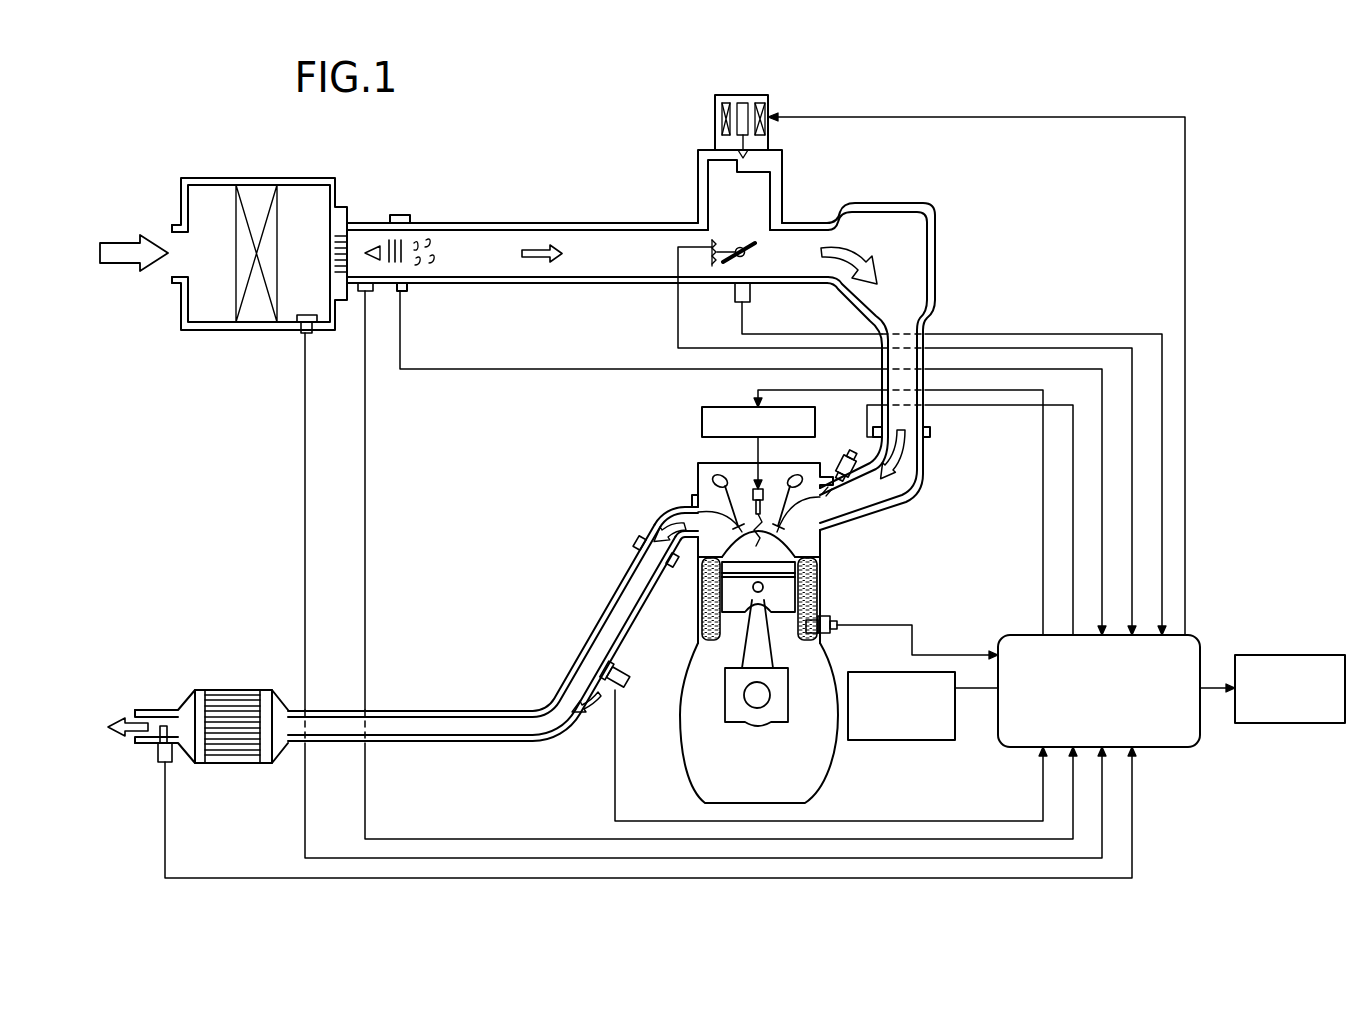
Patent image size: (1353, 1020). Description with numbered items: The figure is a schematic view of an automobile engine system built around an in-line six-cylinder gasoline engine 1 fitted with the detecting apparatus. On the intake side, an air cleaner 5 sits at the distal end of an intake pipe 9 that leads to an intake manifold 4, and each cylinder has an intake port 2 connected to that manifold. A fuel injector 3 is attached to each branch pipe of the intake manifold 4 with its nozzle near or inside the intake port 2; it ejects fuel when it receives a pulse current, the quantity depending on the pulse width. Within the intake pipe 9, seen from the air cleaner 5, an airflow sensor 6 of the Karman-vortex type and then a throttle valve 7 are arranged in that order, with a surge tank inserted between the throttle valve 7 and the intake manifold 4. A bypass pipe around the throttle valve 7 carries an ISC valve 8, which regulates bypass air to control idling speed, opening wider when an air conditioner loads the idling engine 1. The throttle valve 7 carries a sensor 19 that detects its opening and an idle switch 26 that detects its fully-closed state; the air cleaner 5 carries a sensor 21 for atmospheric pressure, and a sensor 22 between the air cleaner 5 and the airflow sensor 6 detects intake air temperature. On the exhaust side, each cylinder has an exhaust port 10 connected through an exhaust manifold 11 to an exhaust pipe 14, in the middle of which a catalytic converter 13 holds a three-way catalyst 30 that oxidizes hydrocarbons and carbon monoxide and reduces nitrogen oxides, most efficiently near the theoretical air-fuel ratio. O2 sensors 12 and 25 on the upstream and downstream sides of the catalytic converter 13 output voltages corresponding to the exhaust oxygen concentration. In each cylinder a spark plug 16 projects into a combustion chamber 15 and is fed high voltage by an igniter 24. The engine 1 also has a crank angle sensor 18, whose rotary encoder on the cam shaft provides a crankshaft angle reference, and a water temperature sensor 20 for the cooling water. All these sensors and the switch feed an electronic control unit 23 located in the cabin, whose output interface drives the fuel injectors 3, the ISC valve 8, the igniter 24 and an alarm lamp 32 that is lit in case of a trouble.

The engine 1 is at (816, 610).
The intake port 2 is at (798, 523).
The fuel injector 3 is at (858, 455).
The intake manifold 4 is at (925, 478).
The air cleaner 5 is at (237, 222).
The airflow sensor 6 is at (401, 292).
The throttle valve 7 is at (751, 257).
The ISC valve 8 is at (715, 131).
The intake pipe 9 is at (935, 272).
The exhaust port 10 is at (713, 513).
The exhaust manifold 11 is at (663, 512).
The O2 sensor 12 is at (628, 668).
The catalytic converter 13 is at (198, 726).
The exhaust pipe 14 is at (490, 712).
The combustion chamber 15 is at (807, 553).
The spark plug 16 is at (753, 487).
The crank angle sensor 18 is at (873, 741).
The throttle opening sensor 19 is at (712, 247).
The water temperature sensor 20 is at (933, 586).
The atmospheric pressure sensor 21 is at (297, 320).
The intake air temperature sensor 22 is at (358, 293).
The electronic control unit 23 is at (1202, 643).
The igniter 24 is at (702, 410).
The O2 sensor 25 is at (158, 757).
The idle switch 26 is at (735, 293).
The three-way catalyst 30 is at (233, 764).
The alarm lamp 32 is at (1317, 654).